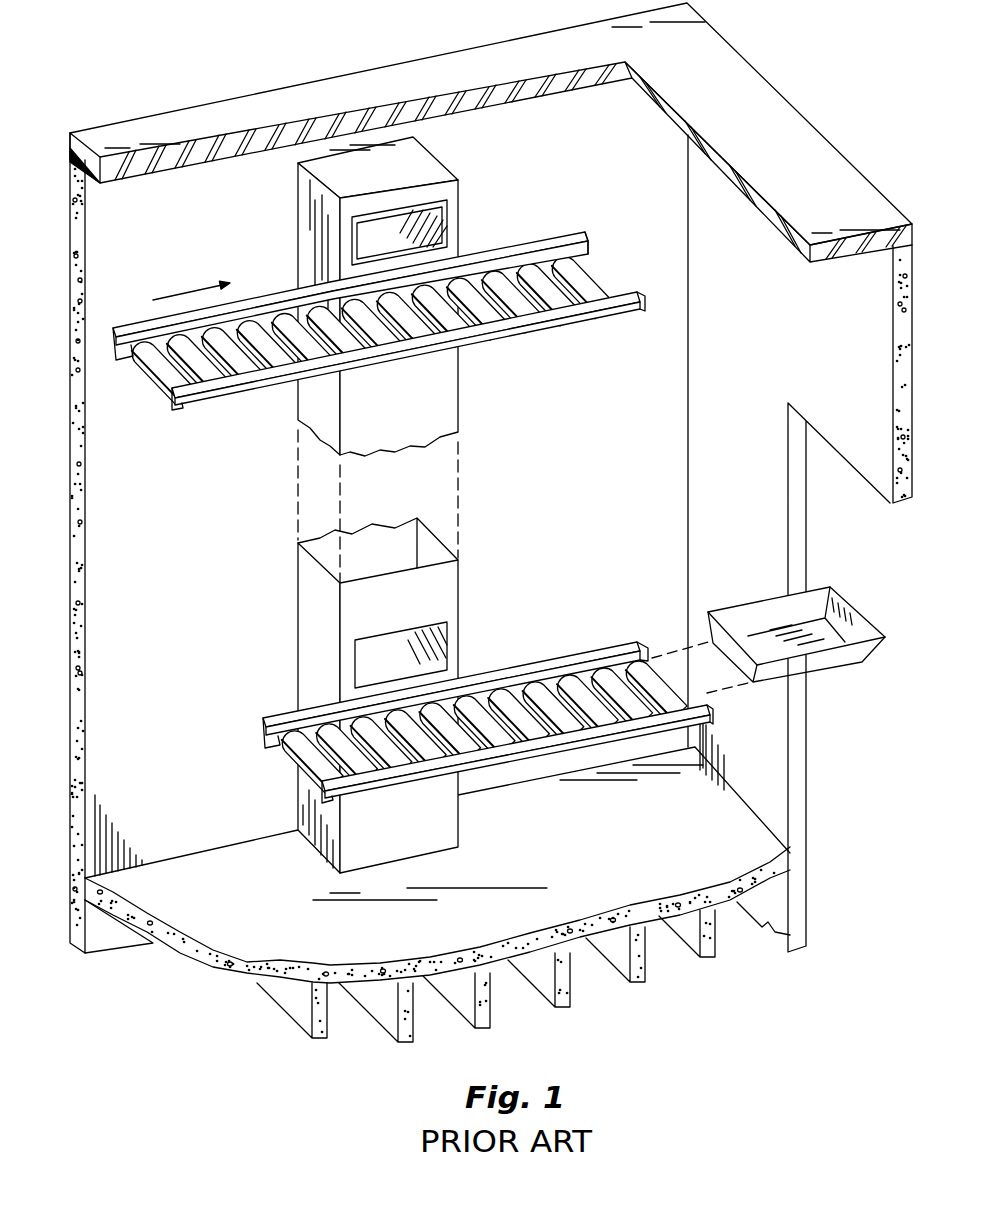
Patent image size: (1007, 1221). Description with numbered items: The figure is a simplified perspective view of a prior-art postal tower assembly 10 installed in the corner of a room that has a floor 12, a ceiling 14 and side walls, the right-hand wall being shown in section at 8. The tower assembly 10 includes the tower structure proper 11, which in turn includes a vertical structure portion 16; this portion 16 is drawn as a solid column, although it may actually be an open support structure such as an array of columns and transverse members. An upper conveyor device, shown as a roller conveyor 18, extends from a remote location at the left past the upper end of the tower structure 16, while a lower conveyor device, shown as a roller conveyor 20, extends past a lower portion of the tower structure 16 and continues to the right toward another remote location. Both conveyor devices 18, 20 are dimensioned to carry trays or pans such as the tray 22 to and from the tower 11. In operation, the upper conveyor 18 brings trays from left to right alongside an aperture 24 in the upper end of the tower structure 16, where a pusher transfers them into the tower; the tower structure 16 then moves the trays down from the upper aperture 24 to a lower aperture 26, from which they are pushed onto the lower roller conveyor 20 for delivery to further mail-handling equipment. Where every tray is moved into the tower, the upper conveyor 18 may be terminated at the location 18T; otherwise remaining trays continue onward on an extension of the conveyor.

The right side wall with opening 8 is at (847, 465).
The tower assembly 10 is at (115, 543).
The tower structure proper 11 is at (293, 491).
The floor 12 is at (220, 844).
The ceiling 14 is at (189, 168).
The vertical structure portion 16 is at (460, 401).
The upper conveyor device (roller conveyor) 18 is at (230, 404).
The termination location of upper conveyor 18T is at (598, 272).
The lower conveyor device (roller conveyor) 20 is at (530, 767).
The tray 22 is at (847, 667).
The upper aperture 24 is at (418, 224).
The lower aperture 26 is at (418, 651).